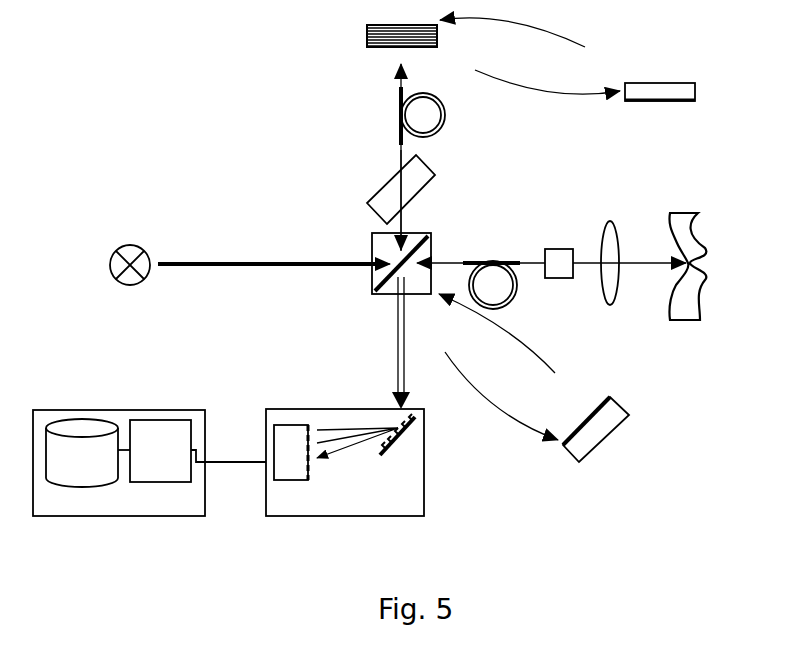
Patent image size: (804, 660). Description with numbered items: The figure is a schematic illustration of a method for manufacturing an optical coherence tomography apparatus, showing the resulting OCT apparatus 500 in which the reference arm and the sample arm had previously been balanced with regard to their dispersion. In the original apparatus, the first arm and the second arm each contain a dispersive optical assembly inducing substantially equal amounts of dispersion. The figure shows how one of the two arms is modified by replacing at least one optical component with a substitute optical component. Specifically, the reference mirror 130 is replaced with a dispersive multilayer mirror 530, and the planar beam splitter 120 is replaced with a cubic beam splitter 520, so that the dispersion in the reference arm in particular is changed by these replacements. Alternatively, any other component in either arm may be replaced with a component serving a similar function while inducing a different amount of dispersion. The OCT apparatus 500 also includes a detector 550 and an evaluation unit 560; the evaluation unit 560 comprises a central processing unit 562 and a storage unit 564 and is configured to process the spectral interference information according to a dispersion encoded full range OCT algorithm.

The OCT apparatus 500 is at (176, 97).
The cubic beam splitter 520 is at (421, 296).
The dispersive multilayer mirror 530 is at (438, 33).
The reference mirror 130 is at (623, 103).
The planar beam splitter 120 is at (565, 450).
The detector 550 is at (345, 462).
The evaluation unit 560 is at (119, 463).
The central processing unit 562 is at (160, 451).
The storage unit 564 is at (82, 453).